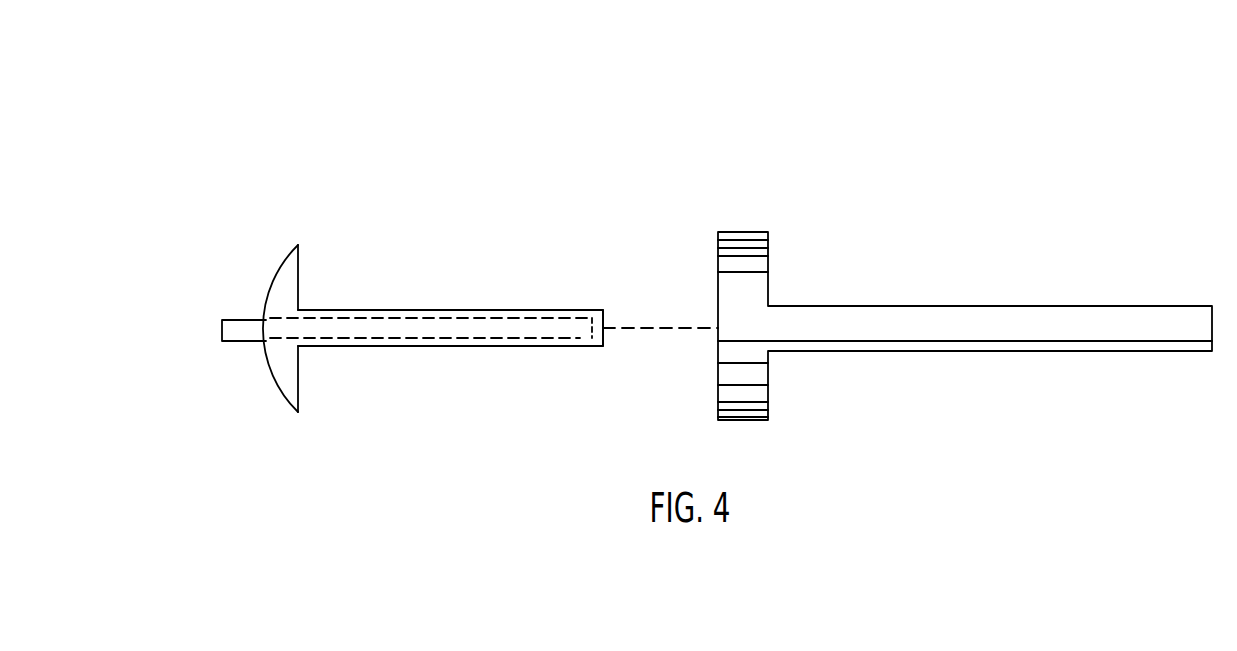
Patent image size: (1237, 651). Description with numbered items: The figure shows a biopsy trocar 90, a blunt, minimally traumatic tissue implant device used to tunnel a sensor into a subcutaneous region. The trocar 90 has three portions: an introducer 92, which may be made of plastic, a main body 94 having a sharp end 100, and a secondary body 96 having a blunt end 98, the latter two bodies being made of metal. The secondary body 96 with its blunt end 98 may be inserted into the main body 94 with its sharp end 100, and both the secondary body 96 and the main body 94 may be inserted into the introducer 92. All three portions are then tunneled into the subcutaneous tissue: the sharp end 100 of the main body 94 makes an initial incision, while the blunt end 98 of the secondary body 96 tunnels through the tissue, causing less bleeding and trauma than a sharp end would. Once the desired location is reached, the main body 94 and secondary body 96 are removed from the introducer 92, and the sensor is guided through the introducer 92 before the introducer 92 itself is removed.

The biopsy trocar 90 is at (592, 137).
The introducer 92 is at (962, 351).
The main body 94 is at (442, 346).
The secondary body 96 is at (225, 341).
The blunt end 98 is at (592, 330).
The sharp end 100 is at (603, 310).